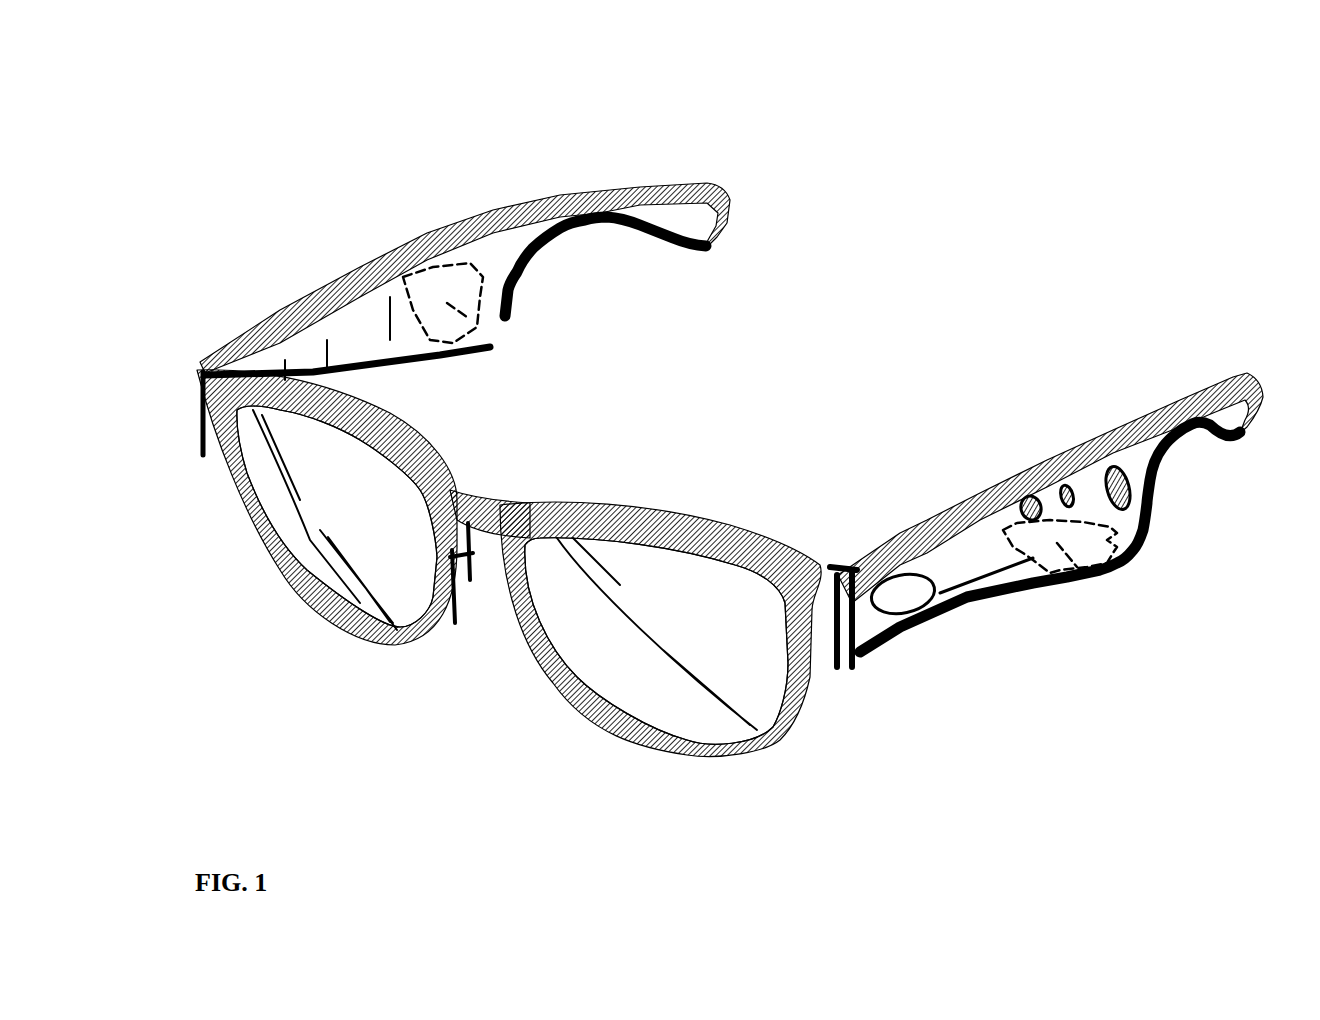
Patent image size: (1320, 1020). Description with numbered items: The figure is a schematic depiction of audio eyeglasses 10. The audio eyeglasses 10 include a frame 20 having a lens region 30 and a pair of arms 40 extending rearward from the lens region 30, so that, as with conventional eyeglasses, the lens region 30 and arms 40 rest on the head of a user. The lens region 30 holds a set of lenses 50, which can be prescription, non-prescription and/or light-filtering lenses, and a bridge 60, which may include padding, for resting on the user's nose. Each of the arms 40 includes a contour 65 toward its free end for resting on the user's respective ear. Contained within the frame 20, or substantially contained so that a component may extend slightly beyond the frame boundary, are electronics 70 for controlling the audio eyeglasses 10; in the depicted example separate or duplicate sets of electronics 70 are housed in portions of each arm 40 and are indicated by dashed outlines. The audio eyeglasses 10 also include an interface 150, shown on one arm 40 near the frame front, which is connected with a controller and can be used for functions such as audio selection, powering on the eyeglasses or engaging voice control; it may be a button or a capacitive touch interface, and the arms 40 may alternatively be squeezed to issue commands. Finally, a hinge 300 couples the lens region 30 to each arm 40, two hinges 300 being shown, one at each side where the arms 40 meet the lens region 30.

The audio eyeglasses 10 is at (220, 133).
The frame 20 is at (818, 512).
The lens region 30 is at (292, 654).
The arms 40 is at (638, 166).
The lenses 50 is at (286, 538).
The bridge 60 is at (482, 545).
The contour 65 is at (590, 233).
The electronics 70 is at (1120, 632).
The interface 150 is at (905, 616).
The hinge 300 is at (226, 318).